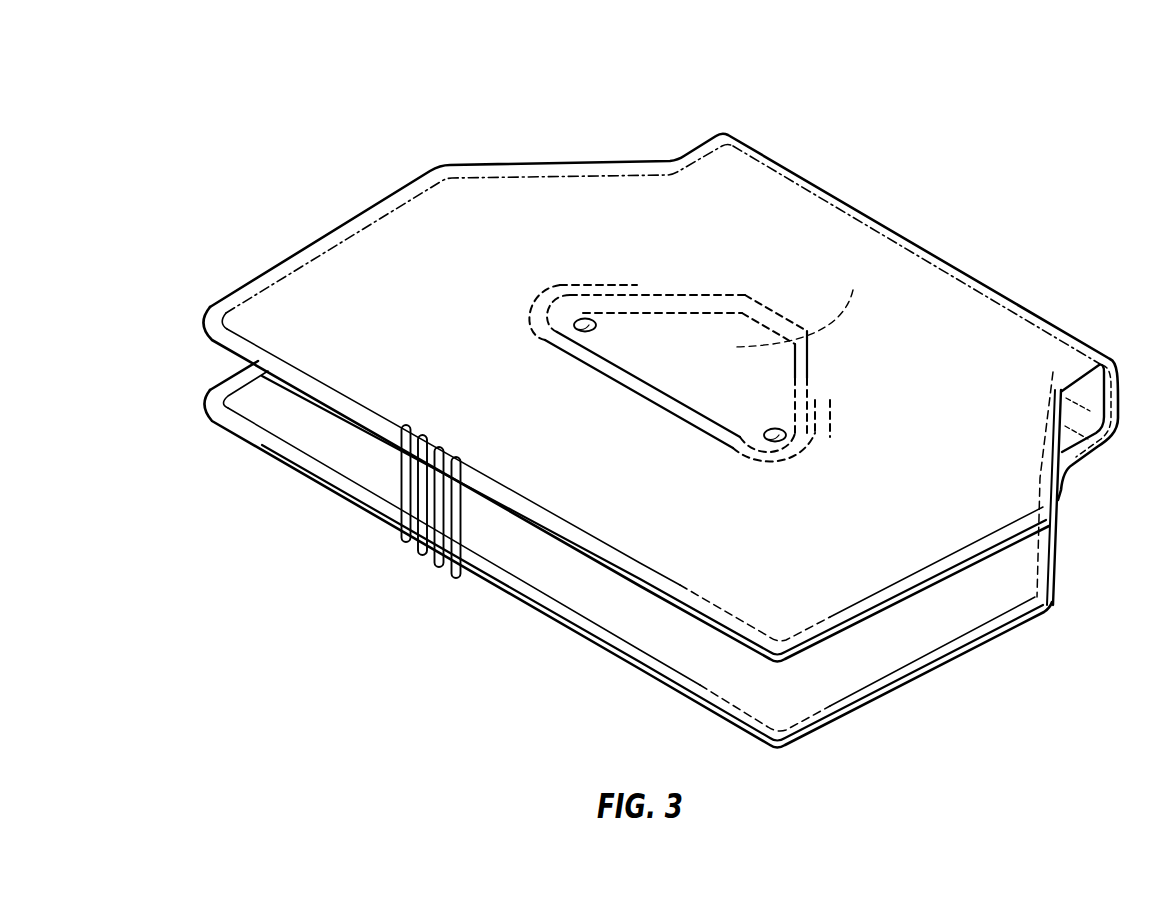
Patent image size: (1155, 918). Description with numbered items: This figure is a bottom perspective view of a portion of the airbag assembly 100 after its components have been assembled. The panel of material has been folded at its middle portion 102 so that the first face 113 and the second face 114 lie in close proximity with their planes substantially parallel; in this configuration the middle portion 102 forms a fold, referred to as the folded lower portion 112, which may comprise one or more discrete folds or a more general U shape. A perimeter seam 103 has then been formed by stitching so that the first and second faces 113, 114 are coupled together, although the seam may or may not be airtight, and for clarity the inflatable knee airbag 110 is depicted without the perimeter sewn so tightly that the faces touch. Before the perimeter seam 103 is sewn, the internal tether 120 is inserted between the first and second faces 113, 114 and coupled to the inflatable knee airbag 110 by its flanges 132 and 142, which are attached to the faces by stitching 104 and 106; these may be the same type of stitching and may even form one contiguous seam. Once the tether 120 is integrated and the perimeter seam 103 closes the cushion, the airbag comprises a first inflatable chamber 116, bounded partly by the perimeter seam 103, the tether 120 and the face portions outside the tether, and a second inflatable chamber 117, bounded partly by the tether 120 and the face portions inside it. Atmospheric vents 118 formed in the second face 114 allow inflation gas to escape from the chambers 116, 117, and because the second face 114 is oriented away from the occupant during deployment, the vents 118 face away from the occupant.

The airbag assembly 100 is at (674, 395).
The middle portion 102 is at (973, 300).
The perimeter seam 103 is at (387, 213).
The stitching 104 is at (537, 327).
The stitching 106 is at (805, 383).
The inflatable knee airbag 110 is at (772, 186).
The folded lower portion 112 is at (1027, 343).
The first face 113 is at (659, 647).
The second face 114 is at (883, 440).
The first inflatable chamber 116 is at (597, 578).
The second inflatable chamber 117 is at (802, 307).
The atmospheric vents 118 is at (585, 325).
The internal tether 120 is at (586, 280).
The flange 132 is at (543, 286).
The flange 142 is at (745, 300).